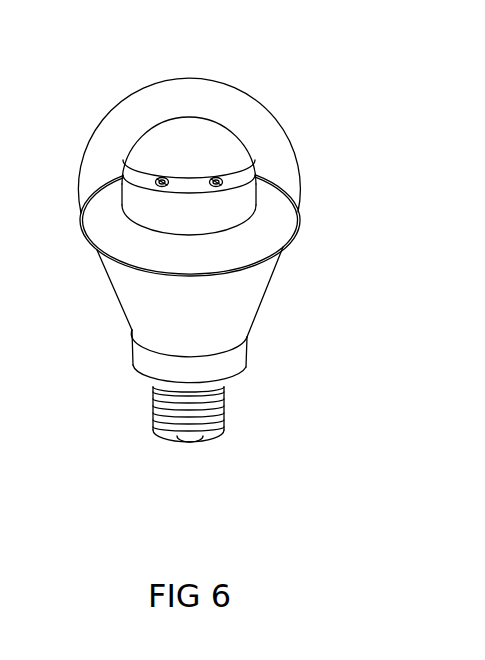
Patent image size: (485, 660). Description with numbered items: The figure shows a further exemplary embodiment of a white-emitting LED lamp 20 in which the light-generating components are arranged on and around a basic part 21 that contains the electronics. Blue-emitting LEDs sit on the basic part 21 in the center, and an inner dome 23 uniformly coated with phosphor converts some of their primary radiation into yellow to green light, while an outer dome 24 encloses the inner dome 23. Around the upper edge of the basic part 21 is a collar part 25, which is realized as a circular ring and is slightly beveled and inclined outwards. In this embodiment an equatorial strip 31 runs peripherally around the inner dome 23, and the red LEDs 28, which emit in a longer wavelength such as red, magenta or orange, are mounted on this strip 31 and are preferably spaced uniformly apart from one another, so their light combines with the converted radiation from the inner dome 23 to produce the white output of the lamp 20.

The LED lamp 20 is at (220, 227).
The basic part 21 is at (268, 281).
The inner dome 23 is at (192, 118).
The outer dome 24 is at (265, 110).
The collar part 25 is at (268, 215).
The LEDs 28 is at (214, 186).
The equatorial strip 31 is at (143, 165).